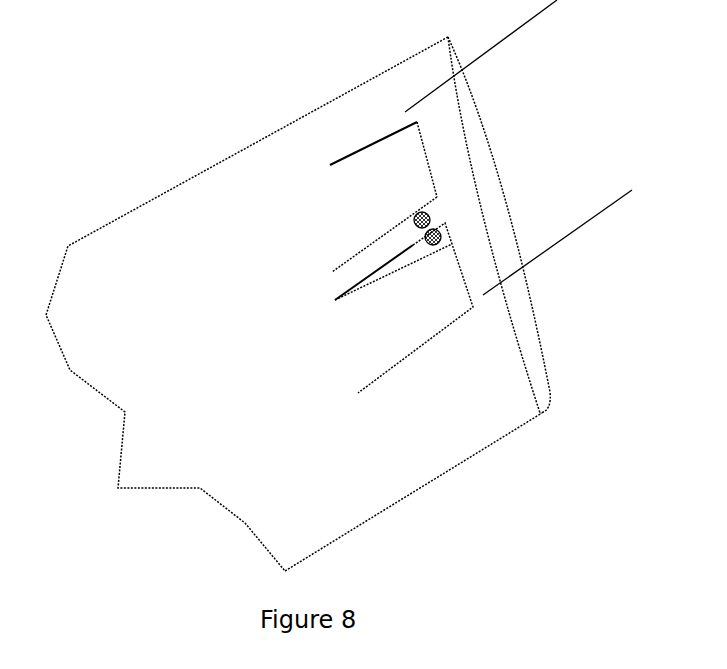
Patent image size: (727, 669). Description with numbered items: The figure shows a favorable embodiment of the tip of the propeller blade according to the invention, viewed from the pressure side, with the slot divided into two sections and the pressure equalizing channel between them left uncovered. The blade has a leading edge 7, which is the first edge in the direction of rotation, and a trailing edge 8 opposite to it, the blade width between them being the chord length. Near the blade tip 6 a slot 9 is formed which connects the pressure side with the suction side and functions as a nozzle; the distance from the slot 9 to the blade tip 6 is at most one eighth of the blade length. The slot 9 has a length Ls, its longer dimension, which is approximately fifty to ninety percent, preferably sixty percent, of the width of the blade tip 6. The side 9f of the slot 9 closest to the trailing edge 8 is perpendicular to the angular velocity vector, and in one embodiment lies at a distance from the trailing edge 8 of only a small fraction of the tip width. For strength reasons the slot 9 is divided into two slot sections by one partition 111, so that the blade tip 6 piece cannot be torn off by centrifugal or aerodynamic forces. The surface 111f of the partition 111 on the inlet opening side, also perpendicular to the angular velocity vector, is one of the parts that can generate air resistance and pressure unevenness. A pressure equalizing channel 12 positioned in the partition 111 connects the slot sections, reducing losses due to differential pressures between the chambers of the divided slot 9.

The trailing edge 8 is at (182, 183).
The leading edge 7 is at (505, 442).
The blade tip 6 is at (528, 322).
The slot 9 is at (345, 318).
The side of the slot closest to the trailing edge 9f is at (403, 120).
The partition 111 is at (378, 248).
The surface of the partition on the inlet opening side 111f is at (417, 253).
The pressure equalizing channel 12 is at (427, 217).
The slot length Ls is at (552, 7).